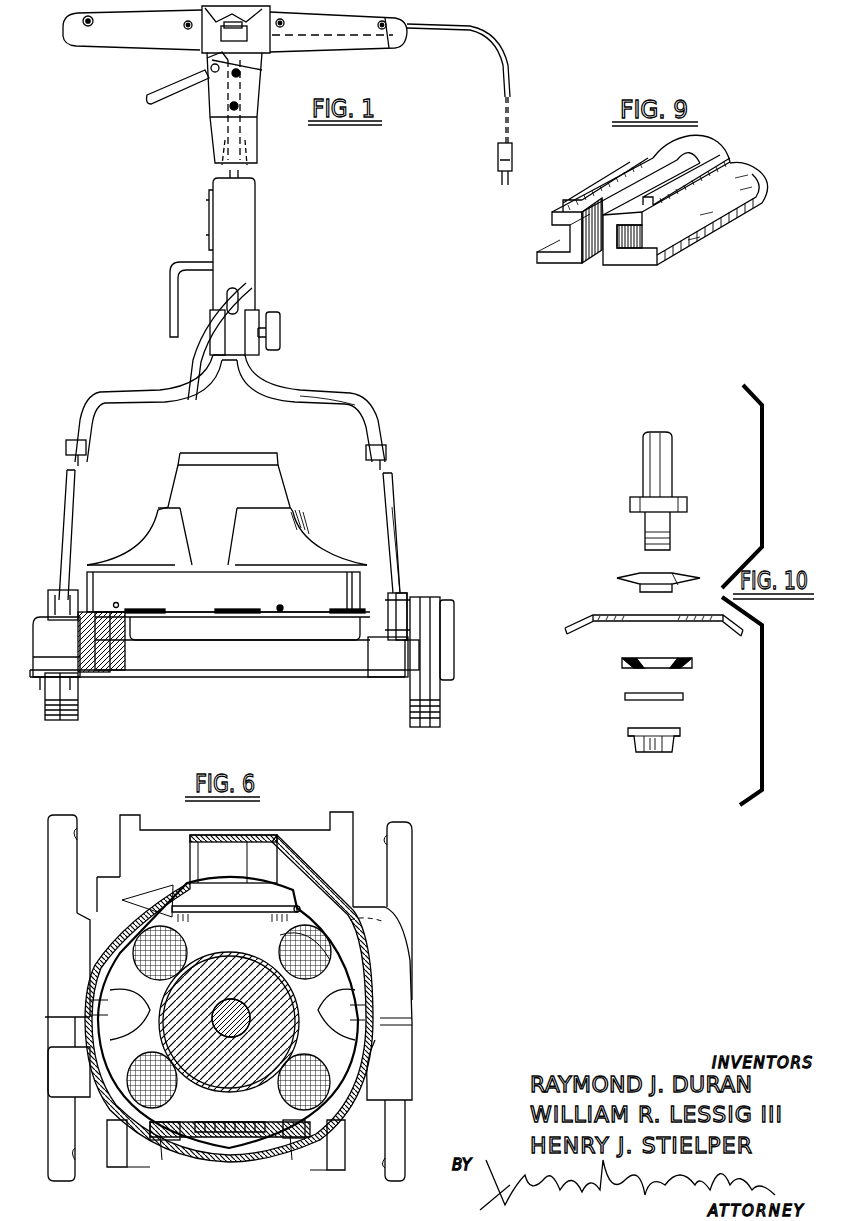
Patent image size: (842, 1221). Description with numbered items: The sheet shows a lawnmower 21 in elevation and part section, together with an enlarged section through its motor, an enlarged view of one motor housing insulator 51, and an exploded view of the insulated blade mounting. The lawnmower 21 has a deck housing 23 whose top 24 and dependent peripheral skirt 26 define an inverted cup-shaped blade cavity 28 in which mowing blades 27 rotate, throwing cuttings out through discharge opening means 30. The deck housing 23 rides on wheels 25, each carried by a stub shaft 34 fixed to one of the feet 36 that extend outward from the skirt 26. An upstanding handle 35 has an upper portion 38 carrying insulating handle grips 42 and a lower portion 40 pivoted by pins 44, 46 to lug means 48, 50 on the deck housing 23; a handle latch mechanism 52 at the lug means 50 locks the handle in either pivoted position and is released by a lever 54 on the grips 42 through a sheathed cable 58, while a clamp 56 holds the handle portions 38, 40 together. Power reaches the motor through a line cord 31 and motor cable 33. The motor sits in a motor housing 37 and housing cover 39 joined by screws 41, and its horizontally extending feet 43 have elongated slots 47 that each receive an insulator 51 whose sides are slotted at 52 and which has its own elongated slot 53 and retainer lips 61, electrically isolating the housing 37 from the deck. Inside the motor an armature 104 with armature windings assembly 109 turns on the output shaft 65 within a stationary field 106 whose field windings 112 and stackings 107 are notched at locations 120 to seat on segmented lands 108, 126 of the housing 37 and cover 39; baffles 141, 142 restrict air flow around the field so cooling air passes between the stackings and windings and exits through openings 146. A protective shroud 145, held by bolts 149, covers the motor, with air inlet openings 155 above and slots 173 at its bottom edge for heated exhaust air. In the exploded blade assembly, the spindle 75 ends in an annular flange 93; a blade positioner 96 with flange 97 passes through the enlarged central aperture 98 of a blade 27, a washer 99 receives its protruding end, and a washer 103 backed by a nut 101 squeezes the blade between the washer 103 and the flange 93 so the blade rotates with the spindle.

In FIG. 1, the lawnmower 21 is at (323, 372).
In FIG. 1, the deck housing 23 is at (265, 604).
In FIG. 1, the top 24 is at (190, 635).
In FIG. 1, the wheels 25 is at (75, 690).
In FIG. 1, the skirt 26 is at (36, 620).
In FIG. 1, the mowing blades 27 is at (55, 680).
In FIG. 10, the mowing blades 27 is at (695, 622).
In FIG. 1, the blade cavity 28 is at (385, 650).
In FIG. 1, the discharge opening means 30 is at (454, 660).
In FIG. 1, the line cord 31 is at (505, 75).
In FIG. 1, the motor cable 33 is at (188, 373).
In FIG. 1, the stub shaft 34 is at (92, 612).
In FIG. 1, the handle 35 is at (252, 295).
In FIG. 1, the feet 36 is at (110, 655).
In FIG. 6, the motor housing 37 is at (360, 1005).
In FIG. 1, the upper portion 38 is at (255, 208).
In FIG. 6, the housing cover 39 is at (360, 1100).
In FIG. 1, the lower portion 40 is at (92, 404).
In FIG. 6, the screws 41 is at (95, 1005).
In FIG. 1, the insulating handle grips 42 is at (365, 27).
In FIG. 6, the feet 43 is at (65, 825).
In FIG. 1, the pin 44 is at (65, 600).
In FIG. 1, the pin 46 is at (410, 606).
In FIG. 6, the elongated slot 47 is at (76, 838).
In FIG. 1, the lug means 48 is at (56, 582).
In FIG. 1, the lug means 50 is at (400, 592).
In FIG. 9, the insulator 51 is at (696, 263).
In FIG. 1, the handle latch mechanism 52 is at (381, 546).
In FIG. 9, the handle latch mechanism 52 is at (565, 244).
In FIG. 9, the elongated slot 53 is at (587, 262).
In FIG. 1, the lever 54 is at (160, 100).
In FIG. 1, the clamp 56 is at (283, 332).
In FIG. 1, the sheathed cable 58 is at (336, 420).
In FIG. 9, the retainer lips 61 is at (610, 172).
In FIG. 6, the output shaft 65 is at (252, 965).
In FIG. 10, the spindle 75 is at (672, 455).
In FIG. 10, the annular flange 93 is at (685, 505).
In FIG. 10, the blade positioner 96 is at (632, 585).
In FIG. 10, the flange 97 is at (688, 580).
In FIG. 10, the central aperture 98 is at (645, 622).
In FIG. 10, the washer 99 is at (692, 663).
In FIG. 10, the nut 101 is at (676, 750).
In FIG. 10, the washer 103 is at (683, 697).
In FIG. 6, the armature 104 is at (330, 1032).
In FIG. 6, the field 106 is at (94, 964).
In FIG. 6, the stackings 107 is at (330, 1045).
In FIG. 6, the segmented lands 108 is at (190, 886).
In FIG. 6, the armature windings assembly 109 is at (306, 1027).
In FIG. 6, the field windings 112 is at (125, 1075).
In FIG. 6, the notched locations 120 is at (173, 907).
In FIG. 6, the segmented lands 126 is at (183, 1140).
In FIG. 6, the baffle 141 is at (240, 892).
In FIG. 6, the baffle 142 is at (230, 1140).
In FIG. 1, the protective shroud 145 is at (226, 515).
In FIG. 6, the openings 146 is at (238, 1112).
In FIG. 1, the bolts 149 is at (118, 605).
In FIG. 1, the air inlet openings 155 is at (158, 523).
In FIG. 1, the slots 173 is at (235, 610).